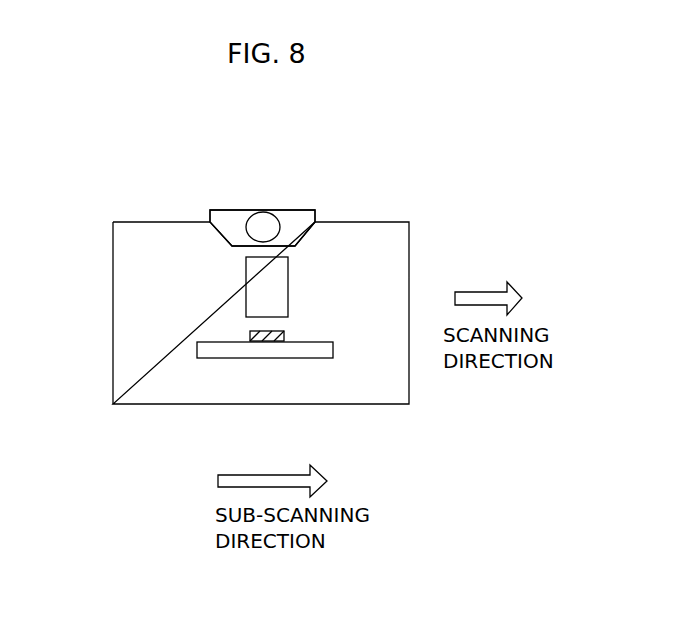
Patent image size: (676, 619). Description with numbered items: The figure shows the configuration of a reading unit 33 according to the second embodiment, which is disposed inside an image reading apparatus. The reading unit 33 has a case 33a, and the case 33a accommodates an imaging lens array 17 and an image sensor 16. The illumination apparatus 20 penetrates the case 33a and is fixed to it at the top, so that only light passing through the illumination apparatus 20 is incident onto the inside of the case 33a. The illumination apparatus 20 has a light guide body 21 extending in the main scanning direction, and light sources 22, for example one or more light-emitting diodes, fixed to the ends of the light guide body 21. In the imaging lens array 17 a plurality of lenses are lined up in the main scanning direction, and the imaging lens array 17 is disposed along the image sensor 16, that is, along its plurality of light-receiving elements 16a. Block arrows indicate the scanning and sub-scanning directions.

The image sensor 16 is at (313, 360).
The light-receiving elements 16a is at (250, 331).
The imaging lens array 17 is at (267, 283).
The illumination apparatus 20 is at (220, 207).
The light guide body 21 is at (300, 218).
The light sources 22 is at (247, 225).
The reading unit 33 is at (404, 203).
The case 33a is at (112, 312).